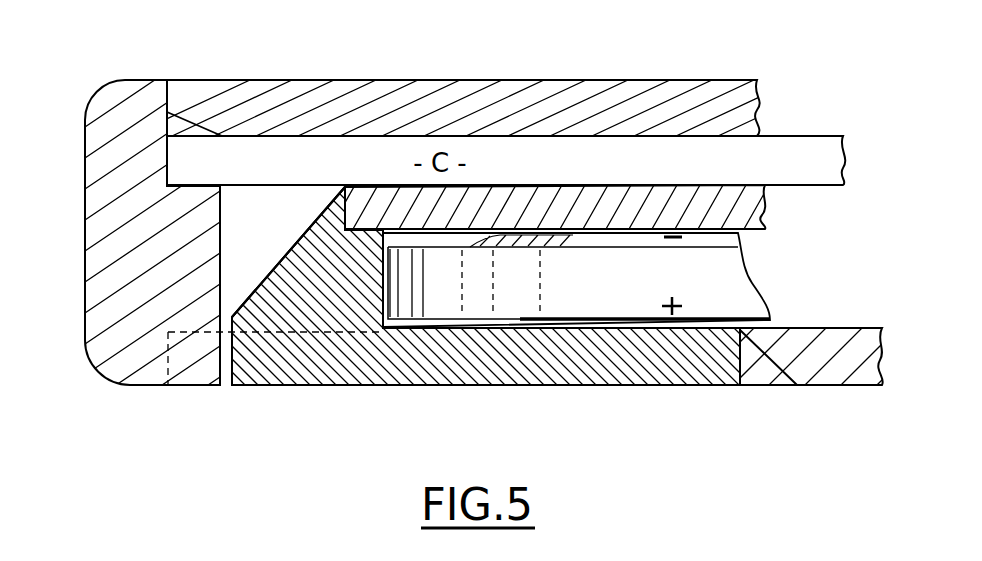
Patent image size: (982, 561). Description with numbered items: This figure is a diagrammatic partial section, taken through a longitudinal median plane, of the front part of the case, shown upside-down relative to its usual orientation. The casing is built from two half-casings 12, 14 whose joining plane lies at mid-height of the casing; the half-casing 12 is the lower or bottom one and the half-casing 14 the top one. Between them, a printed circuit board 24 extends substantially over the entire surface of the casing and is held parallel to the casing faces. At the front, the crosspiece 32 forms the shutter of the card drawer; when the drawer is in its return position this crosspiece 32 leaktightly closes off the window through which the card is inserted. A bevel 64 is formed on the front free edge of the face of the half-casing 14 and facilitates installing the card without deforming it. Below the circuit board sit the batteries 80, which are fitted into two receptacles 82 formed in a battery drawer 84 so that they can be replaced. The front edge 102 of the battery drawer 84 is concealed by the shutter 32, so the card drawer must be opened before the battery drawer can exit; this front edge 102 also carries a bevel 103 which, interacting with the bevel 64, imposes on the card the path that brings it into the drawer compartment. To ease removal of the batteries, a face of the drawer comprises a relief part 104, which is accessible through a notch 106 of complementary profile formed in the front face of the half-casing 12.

The half-casing 12 is at (850, 368).
The half-casing 14 is at (452, 104).
The printed circuit board 24 is at (767, 200).
The crosspiece 32 is at (96, 190).
The bevel 64 is at (165, 125).
The battery 80 is at (576, 280).
The receptacle 82 is at (384, 290).
The battery drawer 84 is at (290, 350).
The front edge 102 is at (262, 262).
The bevel 103 is at (299, 238).
The relief part 104 is at (636, 362).
The notch 106 is at (765, 362).